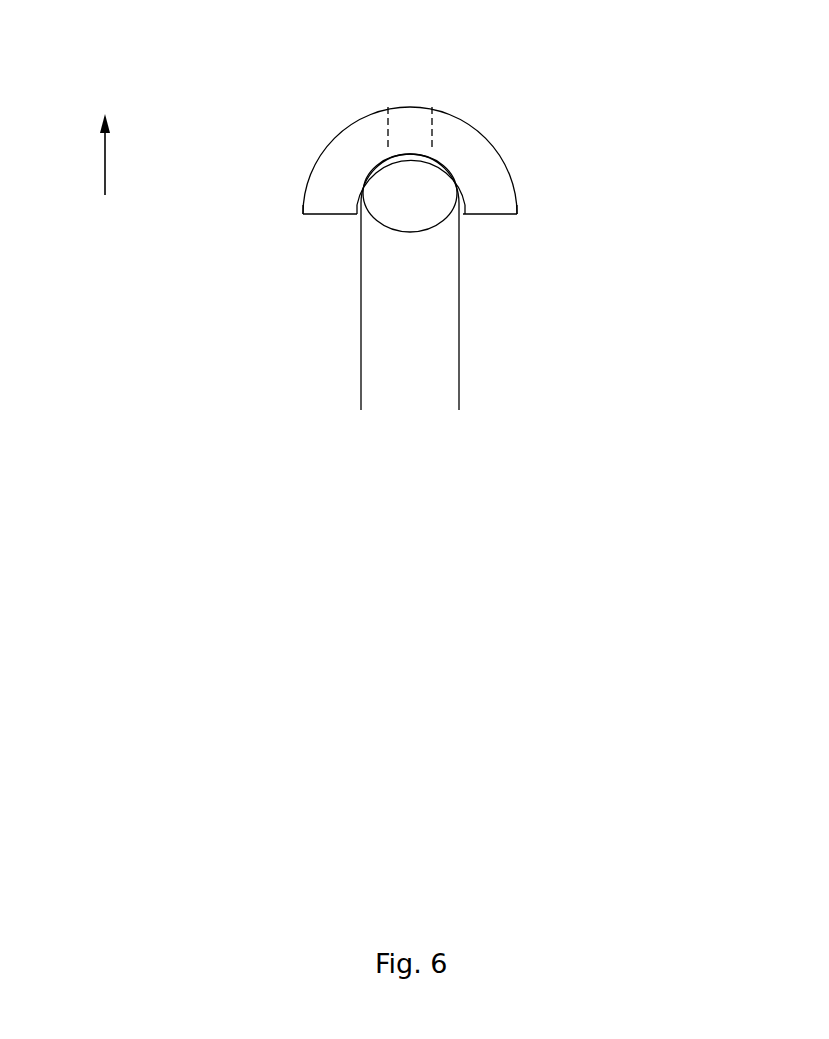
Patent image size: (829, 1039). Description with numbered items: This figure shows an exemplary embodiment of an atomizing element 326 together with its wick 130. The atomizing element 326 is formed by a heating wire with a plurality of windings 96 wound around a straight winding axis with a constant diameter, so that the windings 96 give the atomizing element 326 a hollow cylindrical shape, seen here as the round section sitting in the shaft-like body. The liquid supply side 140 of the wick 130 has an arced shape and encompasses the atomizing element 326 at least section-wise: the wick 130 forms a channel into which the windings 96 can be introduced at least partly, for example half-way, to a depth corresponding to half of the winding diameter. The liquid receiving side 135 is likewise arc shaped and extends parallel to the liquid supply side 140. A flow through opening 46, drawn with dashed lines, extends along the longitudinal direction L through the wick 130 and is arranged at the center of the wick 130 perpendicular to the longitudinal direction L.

The flow through opening 46 is at (430, 119).
The liquid receiving side 135 is at (325, 138).
The wick 130 is at (502, 145).
The liquid supply side 140 is at (450, 166).
The windings 96 is at (390, 232).
The atomizing element 326 is at (495, 257).
The longitudinal direction L is at (103, 160).